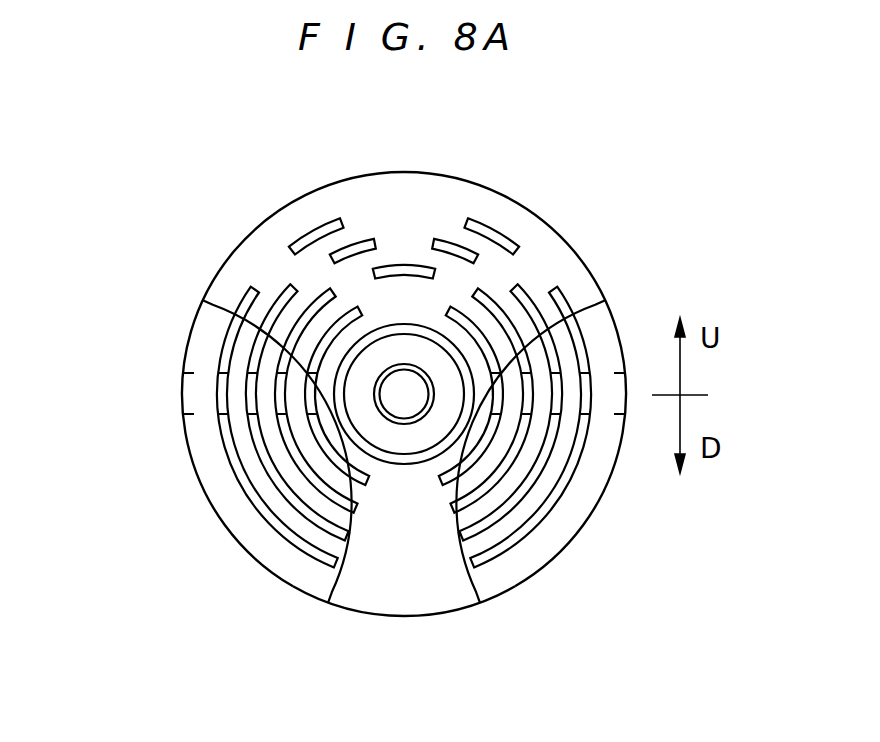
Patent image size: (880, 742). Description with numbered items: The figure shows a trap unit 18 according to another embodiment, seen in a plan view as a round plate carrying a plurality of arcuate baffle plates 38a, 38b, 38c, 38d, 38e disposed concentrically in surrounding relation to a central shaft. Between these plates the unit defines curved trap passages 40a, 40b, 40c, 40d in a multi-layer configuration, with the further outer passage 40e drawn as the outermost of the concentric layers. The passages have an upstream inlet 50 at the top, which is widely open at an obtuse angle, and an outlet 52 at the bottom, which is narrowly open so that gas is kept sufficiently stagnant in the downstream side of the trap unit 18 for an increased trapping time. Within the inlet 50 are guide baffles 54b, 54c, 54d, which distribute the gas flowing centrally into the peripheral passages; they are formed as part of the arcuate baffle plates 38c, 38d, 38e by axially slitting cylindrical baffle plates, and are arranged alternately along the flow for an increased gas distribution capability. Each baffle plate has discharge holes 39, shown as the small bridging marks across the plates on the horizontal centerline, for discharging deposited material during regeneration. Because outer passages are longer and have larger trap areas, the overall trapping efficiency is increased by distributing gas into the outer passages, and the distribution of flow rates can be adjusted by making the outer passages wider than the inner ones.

The trap unit 18 is at (610, 122).
The upstream inlet 50 is at (592, 221).
The outlet 52 is at (483, 648).
The discharge hole 39 is at (185, 392).
The arcuate baffle plate 38a is at (457, 475).
The arcuate baffle plate 38b is at (502, 467).
The arcuate baffle plate 38c is at (548, 452).
The arcuate baffle plate 38d is at (582, 347).
The arcuate baffle plate 38e is at (607, 310).
The trap passage 40a is at (335, 433).
The trap passage 40b is at (300, 428).
The trap passage 40c is at (268, 425).
The trap passage 40d is at (237, 363).
The arcuate slit 40e is at (212, 328).
The guide baffle 54b is at (407, 270).
The guide baffle 54c is at (373, 243).
The guide baffle 54d is at (308, 232).